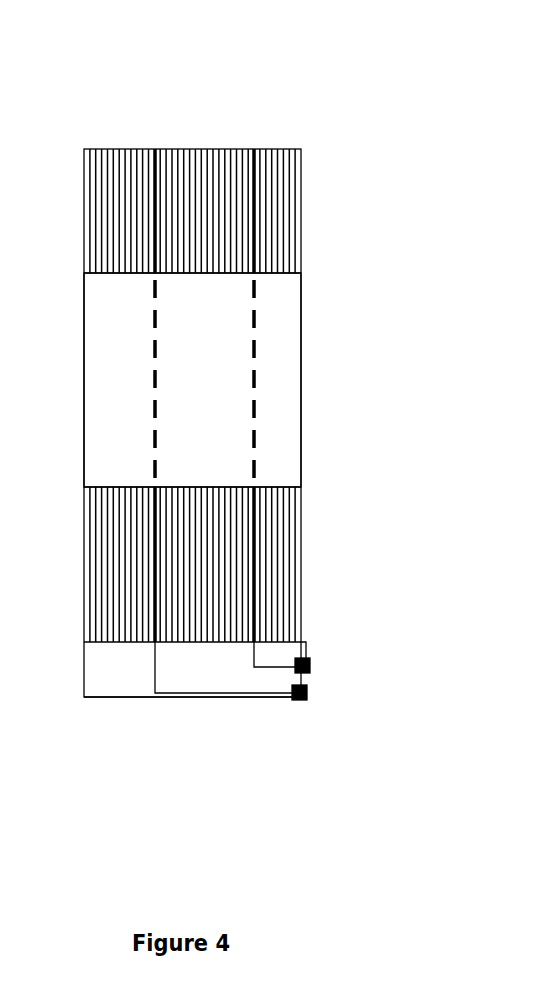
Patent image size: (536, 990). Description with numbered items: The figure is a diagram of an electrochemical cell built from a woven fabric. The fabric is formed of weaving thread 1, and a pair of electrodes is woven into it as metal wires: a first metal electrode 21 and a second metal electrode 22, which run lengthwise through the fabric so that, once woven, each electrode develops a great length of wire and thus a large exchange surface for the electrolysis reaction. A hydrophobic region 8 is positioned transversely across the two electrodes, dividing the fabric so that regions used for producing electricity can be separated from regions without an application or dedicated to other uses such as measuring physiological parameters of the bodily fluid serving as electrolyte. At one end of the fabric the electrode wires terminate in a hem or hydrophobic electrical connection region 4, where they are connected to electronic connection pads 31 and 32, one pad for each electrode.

The weaving thread 1 is at (296, 202).
The transverse hydrophobic region 8 is at (294, 357).
The metal electrode Metal 1 21 is at (153, 135).
The metal electrode Metal 2 22 is at (261, 136).
The hydrophobic electrical connection region 4 is at (297, 646).
The electronic connection pad 31 is at (284, 709).
The electronic connection pad 32 is at (315, 684).